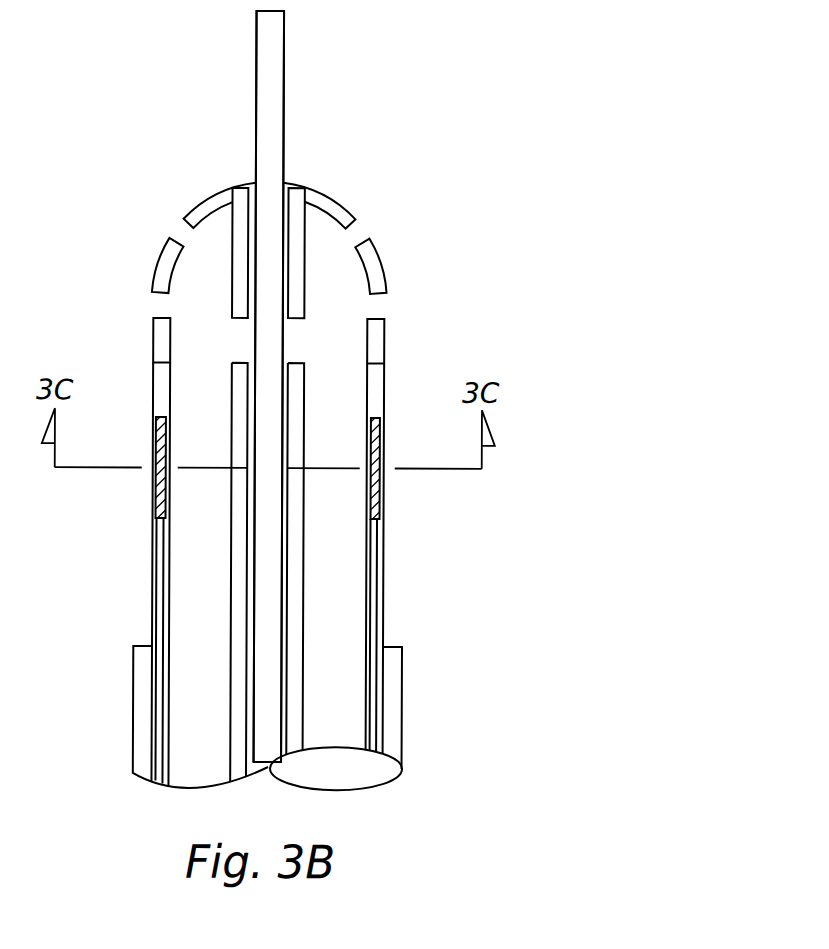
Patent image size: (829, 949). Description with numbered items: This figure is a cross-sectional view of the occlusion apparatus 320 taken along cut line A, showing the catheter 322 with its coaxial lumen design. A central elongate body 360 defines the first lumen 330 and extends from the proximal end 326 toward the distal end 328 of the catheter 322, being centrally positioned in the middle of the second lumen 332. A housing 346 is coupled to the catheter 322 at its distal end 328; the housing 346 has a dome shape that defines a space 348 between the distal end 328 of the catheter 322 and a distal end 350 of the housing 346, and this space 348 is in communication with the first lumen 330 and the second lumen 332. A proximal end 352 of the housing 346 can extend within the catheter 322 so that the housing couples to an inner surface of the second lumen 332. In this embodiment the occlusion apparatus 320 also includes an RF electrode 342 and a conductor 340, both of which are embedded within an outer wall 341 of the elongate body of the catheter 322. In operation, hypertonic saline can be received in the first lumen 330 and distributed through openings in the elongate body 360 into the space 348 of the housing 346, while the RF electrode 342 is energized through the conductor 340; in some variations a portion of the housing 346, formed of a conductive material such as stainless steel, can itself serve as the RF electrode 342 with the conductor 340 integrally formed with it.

The occlusion apparatus 320 is at (507, 90).
The catheter 322 is at (521, 339).
The proximal end 326 is at (436, 720).
The distal end 328 is at (122, 344).
The first lumen 330 is at (247, 179).
The second lumen 332 is at (185, 622).
The conductor 340 is at (154, 567).
The outer wall 341 is at (154, 397).
The RF electrode 342 is at (157, 500).
The housing 346 is at (383, 260).
The space 348 is at (222, 314).
The distal end of the housing 350 is at (312, 156).
The proximal end of the housing 352 is at (407, 353).
The elongate body 360 is at (231, 657).